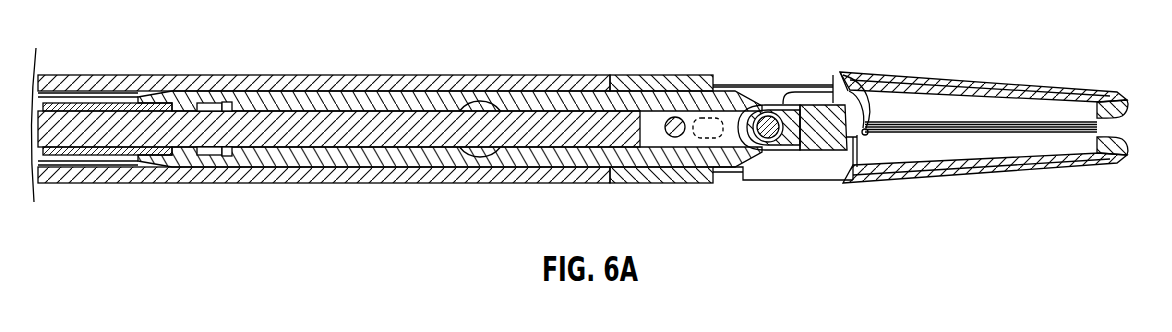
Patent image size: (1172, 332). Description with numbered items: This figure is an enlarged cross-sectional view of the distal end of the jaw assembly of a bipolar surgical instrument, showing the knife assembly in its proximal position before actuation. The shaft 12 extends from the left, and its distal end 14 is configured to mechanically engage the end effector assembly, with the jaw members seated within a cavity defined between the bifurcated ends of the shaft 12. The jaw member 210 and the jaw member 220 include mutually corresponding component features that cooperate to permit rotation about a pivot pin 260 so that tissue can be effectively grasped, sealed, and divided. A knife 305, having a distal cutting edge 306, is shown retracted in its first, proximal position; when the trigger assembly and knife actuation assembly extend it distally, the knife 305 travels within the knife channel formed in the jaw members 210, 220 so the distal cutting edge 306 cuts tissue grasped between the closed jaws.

The shaft 12 is at (134, 75).
The distal end 14 is at (524, 75).
The pivot pin 260 is at (770, 112).
The knife 305 is at (823, 130).
The distal cutting edge 306 is at (857, 128).
The jaw member 210 is at (1047, 67).
The jaw member 220 is at (1047, 192).